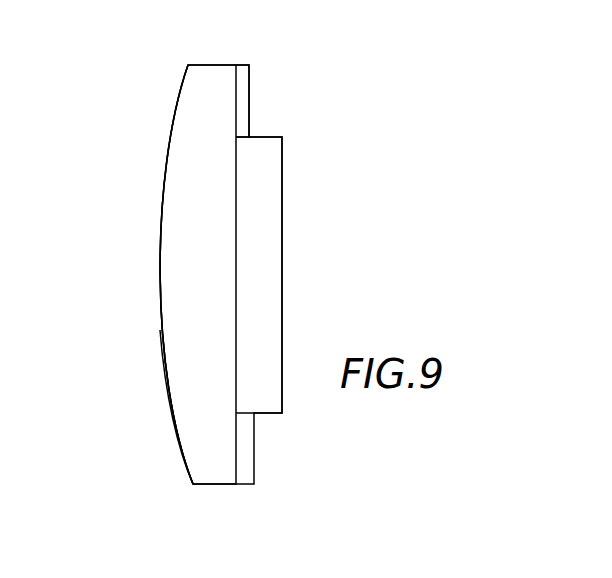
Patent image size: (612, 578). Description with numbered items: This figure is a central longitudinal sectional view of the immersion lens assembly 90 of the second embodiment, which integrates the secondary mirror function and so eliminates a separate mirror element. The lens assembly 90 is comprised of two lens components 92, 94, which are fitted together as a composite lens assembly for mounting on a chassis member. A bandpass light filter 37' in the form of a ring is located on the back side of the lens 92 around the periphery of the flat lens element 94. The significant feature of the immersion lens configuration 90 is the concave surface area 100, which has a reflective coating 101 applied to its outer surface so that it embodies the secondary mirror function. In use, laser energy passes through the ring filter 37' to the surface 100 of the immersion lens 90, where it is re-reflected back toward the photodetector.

The immersion lens assembly 90 is at (168, 72).
The lens component 92 is at (167, 230).
The bandpass light filter 37' is at (276, 101).
The flat lens element 94 is at (272, 192).
The concave surface area 100 is at (162, 328).
The reflective coating 101 is at (170, 397).